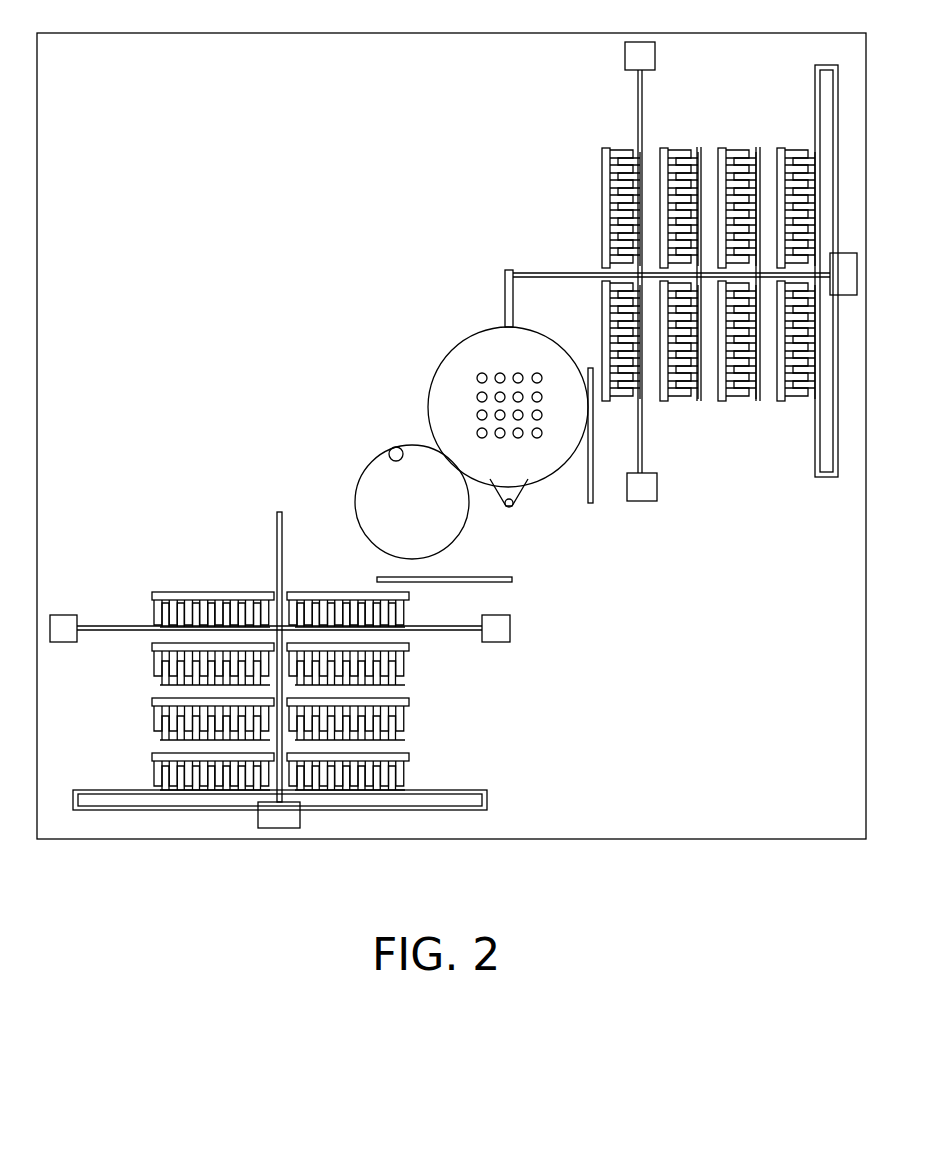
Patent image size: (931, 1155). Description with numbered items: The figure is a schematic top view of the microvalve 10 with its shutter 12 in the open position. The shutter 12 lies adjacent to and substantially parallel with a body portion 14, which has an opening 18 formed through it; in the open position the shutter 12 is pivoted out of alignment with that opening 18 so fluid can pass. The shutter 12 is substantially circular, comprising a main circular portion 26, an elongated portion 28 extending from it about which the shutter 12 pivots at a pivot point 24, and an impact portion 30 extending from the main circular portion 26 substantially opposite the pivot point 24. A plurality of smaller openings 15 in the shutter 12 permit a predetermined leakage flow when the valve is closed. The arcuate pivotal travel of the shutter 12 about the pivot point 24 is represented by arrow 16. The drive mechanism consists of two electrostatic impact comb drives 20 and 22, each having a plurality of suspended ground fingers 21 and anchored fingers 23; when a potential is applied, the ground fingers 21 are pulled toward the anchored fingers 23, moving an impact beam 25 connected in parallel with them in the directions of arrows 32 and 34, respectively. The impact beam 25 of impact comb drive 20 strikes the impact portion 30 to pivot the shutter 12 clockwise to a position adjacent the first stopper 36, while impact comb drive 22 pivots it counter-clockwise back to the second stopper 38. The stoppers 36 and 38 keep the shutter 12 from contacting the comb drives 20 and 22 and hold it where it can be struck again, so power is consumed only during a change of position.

The microvalve 10 is at (268, 165).
The shutter 12 is at (462, 407).
The body portion 14 is at (162, 410).
The smaller openings 15 is at (500, 437).
The arrow 16 is at (490, 276).
The opening 18 is at (392, 450).
The impact comb drive 20 is at (444, 446).
The suspended ground fingers 21 is at (152, 622).
The impact comb drive 22 is at (740, 75).
The anchored fingers 23 is at (156, 600).
The pivot point 24 is at (513, 503).
The impact beam 25 is at (284, 545).
The main circular portion 26 is at (462, 345).
The elongated portion 28 is at (488, 506).
The impact portion 30 is at (502, 292).
The arrow 32 is at (258, 478).
The arrow 34 is at (575, 250).
The first stopper 36 is at (596, 498).
The second stopper 38 is at (508, 584).